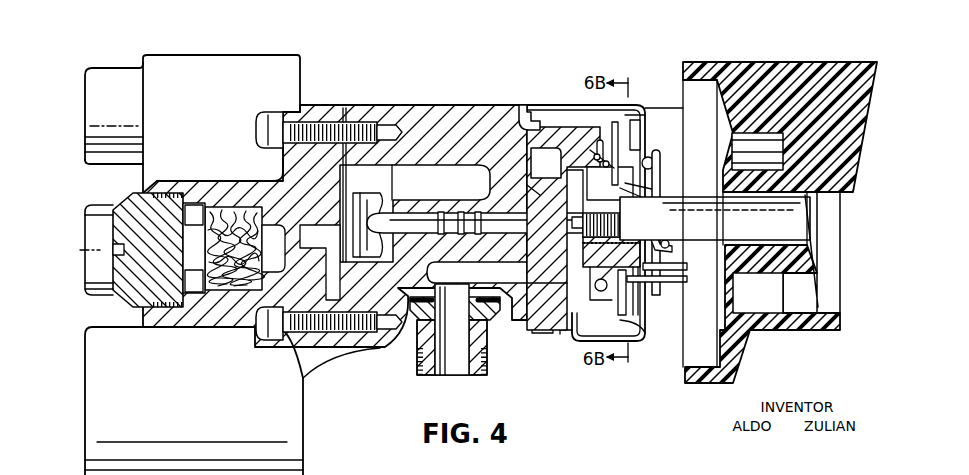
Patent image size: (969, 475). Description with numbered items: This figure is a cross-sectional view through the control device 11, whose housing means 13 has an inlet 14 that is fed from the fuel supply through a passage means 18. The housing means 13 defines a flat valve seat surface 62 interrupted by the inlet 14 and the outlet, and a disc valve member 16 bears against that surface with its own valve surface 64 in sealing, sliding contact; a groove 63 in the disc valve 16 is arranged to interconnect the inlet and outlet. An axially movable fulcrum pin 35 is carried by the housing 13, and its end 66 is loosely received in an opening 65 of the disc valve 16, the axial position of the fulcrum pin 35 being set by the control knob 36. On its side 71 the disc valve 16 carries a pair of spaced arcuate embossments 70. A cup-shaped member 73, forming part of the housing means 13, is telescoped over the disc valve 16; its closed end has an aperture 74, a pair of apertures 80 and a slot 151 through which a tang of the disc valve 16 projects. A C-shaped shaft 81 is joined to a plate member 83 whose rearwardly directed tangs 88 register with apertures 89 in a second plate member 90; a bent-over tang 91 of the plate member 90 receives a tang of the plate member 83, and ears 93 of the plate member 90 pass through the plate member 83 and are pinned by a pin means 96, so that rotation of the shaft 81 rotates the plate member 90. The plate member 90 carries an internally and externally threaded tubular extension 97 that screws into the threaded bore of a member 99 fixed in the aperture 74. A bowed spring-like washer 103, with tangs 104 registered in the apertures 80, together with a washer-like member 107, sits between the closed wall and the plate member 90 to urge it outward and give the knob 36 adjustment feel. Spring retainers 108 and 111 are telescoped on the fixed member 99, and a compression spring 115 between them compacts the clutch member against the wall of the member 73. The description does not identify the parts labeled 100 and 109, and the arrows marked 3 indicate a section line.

The control device 11 is at (727, 36).
The housing means 13 is at (383, 103).
The inlet 14 is at (498, 322).
The disc valve member 16 is at (552, 128).
The passage means 18 is at (467, 370).
The fulcrum pin 35 is at (405, 215).
The control knob 36 is at (823, 64).
The flat surface 62 is at (538, 120).
The groove 63 is at (553, 132).
The valve surface 64 is at (527, 271).
The opening 65 is at (536, 193).
The end 66 is at (541, 288).
The arcuate embossments 70 is at (599, 125).
The side 71 is at (560, 334).
The cup-shaped member 73 is at (542, 345).
The aperture 74 is at (621, 256).
The apertures 80 is at (642, 331).
The C-shaped shaft 81 is at (808, 190).
The plate member 83 is at (656, 184).
The rearwardly directed tangs 88 is at (668, 267).
The apertures 89 is at (660, 280).
The plate member 90 is at (654, 165).
The bent over tang 91 is at (661, 153).
The ears 93 is at (652, 240).
The pin means 96 is at (672, 248).
The tubular extension 97 is at (653, 197).
The member 99 is at (546, 163).
The lever 100 is at (606, 173).
The bowed spring-like washer 103 is at (641, 293).
The tangs 104 is at (638, 304).
The washer-like member 107 is at (641, 145).
The spring retainer 108 is at (595, 285).
The member 109 is at (634, 125).
The spring retainer 111 is at (607, 294).
The compression spring 115 is at (600, 292).
The slot 151 is at (556, 356).
The section line 3- 3 is at (877, 222).